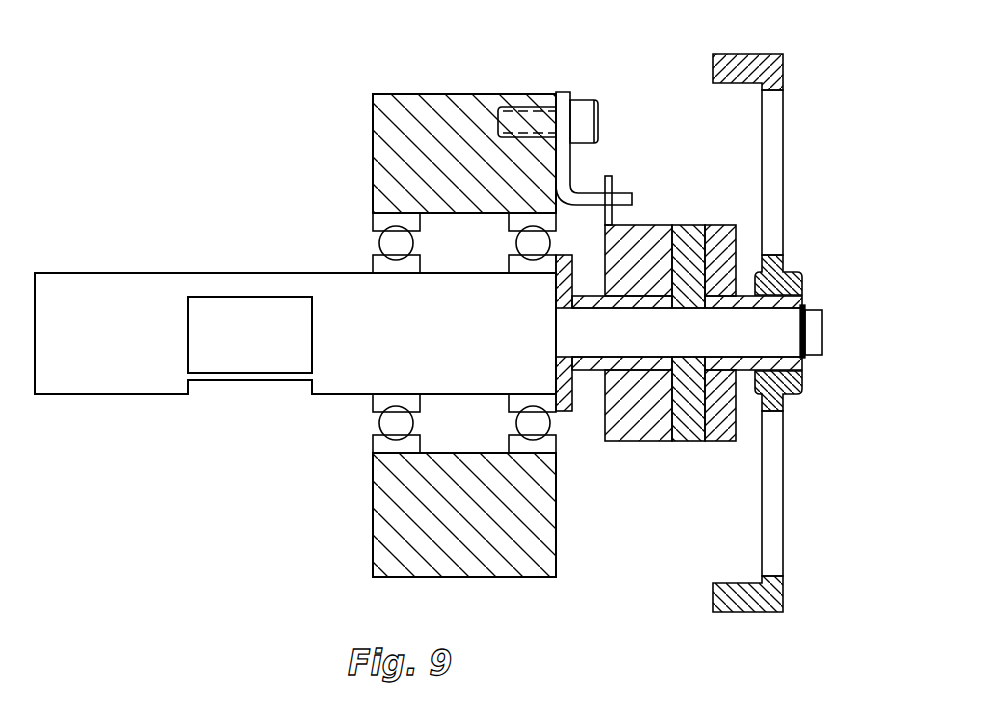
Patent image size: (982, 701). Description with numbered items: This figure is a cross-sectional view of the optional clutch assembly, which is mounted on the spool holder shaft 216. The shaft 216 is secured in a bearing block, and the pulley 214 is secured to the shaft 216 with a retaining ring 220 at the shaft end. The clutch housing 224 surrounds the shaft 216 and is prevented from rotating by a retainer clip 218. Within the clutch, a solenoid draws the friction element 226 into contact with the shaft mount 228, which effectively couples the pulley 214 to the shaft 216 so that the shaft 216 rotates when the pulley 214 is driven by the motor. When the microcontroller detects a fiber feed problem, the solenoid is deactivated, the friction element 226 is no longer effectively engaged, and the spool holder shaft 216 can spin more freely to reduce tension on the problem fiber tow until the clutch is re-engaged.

The pulley 214 is at (783, 62).
The spool holder shaft 216 is at (142, 274).
The retainer clip 218 is at (560, 92).
The retaining ring 220 is at (806, 358).
The clutch housing 224 is at (638, 237).
The friction element 226 is at (688, 242).
The shaft mount 228 is at (716, 228).